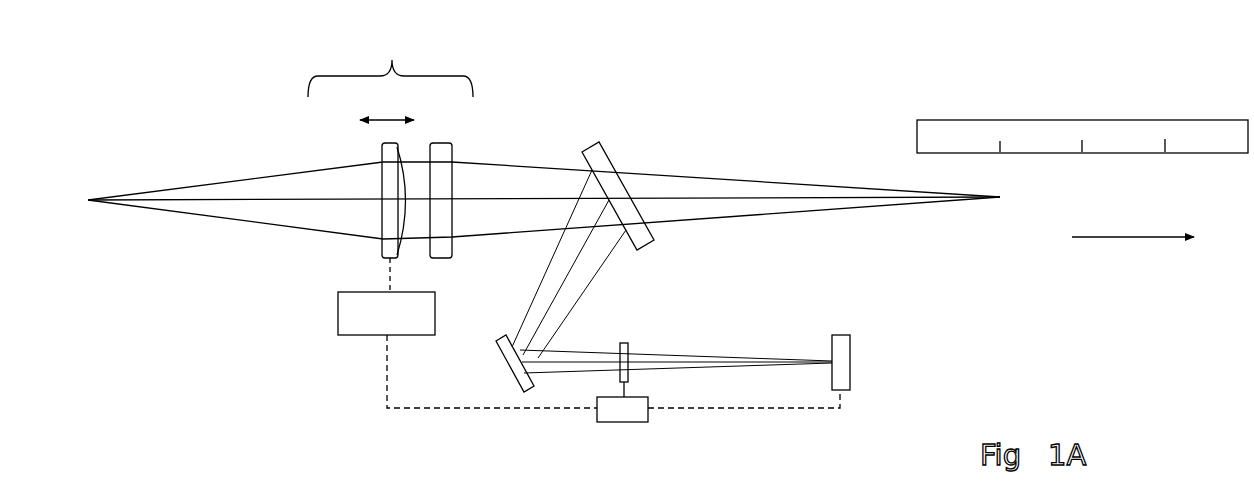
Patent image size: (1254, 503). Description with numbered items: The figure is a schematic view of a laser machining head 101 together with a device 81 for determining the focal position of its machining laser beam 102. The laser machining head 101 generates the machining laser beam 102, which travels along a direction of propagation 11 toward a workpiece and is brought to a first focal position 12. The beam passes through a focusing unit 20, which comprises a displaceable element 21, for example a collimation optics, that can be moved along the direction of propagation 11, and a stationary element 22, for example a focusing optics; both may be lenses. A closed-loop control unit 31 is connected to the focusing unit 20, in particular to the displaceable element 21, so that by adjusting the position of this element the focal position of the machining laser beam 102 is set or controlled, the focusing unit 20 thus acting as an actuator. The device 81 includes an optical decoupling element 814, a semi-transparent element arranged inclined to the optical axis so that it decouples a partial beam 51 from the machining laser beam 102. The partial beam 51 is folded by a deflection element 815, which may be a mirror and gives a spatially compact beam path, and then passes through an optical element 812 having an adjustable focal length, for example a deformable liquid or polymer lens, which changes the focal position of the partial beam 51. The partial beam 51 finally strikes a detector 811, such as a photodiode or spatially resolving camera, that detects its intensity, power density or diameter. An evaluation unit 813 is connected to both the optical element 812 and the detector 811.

The laser machining head 101 is at (241, 258).
The machining laser beam 102 is at (725, 177).
The focusing unit 20 is at (362, 502).
The displaceable element 21 is at (381, 149).
The stationary element 22 is at (447, 145).
The closed-loop control unit 31 is at (338, 311).
The optical decoupling element 814 is at (595, 140).
The device for determining a focal position 81 is at (921, 342).
The partial beam 51 is at (600, 262).
The deflection element 815 is at (497, 342).
The optical element having adjustable focal length 812 is at (630, 350).
The evaluation unit 813 is at (648, 410).
The detector 811 is at (852, 363).
The first focal position 12 is at (1082, 118).
The direction of propagation 11 is at (1133, 224).